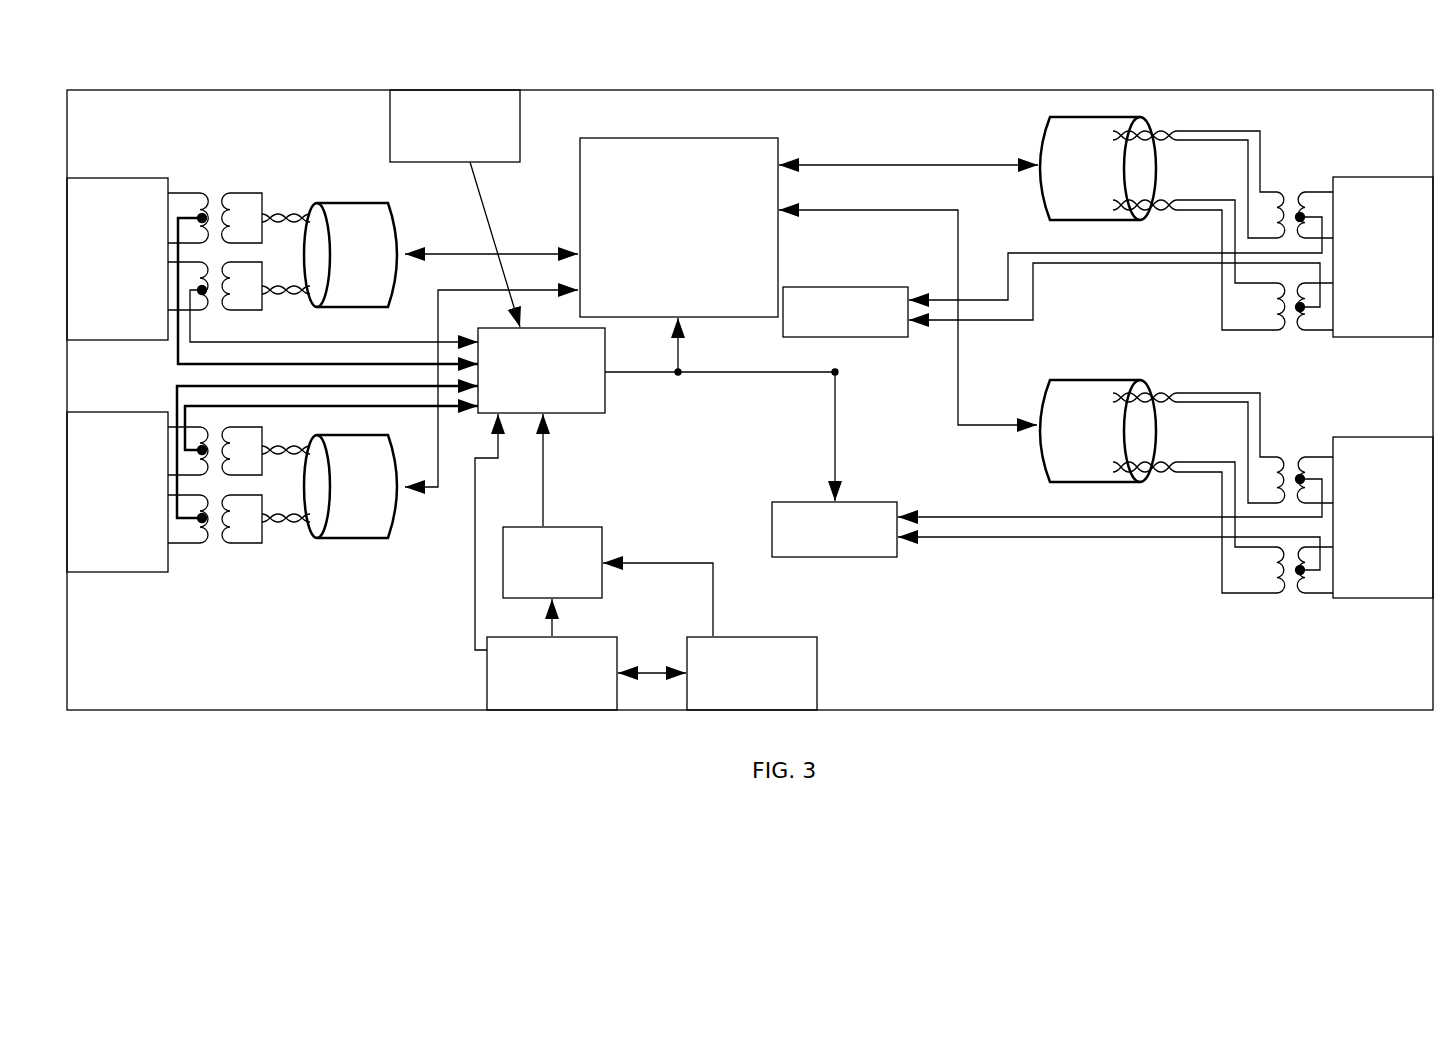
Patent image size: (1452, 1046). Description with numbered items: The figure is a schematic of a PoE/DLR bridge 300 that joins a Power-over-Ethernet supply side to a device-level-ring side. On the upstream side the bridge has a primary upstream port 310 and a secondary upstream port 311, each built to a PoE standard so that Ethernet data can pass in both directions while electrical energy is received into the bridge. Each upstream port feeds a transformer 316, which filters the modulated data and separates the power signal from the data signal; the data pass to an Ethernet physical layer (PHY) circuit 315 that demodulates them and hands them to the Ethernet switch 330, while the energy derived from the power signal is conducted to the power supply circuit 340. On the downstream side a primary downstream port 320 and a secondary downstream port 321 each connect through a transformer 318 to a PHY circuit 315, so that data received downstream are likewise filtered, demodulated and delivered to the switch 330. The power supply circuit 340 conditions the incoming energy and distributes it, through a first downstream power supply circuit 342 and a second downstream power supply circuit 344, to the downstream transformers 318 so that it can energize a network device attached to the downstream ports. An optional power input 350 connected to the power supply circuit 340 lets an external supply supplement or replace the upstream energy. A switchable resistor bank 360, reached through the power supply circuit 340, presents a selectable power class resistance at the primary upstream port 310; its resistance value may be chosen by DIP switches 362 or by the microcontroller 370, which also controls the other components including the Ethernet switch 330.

The PoE/DLR bridge 300 is at (160, 80).
The primary upstream port 310 is at (141, 178).
The secondary upstream port 311 is at (92, 573).
The Ethernet physical layer (PHY) circuit 315 is at (358, 203).
The transformer 316 is at (216, 190).
The transformer 318 is at (1298, 176).
The primary downstream port 320 is at (1402, 177).
The secondary downstream port 321 is at (1360, 599).
The Ethernet switch 330 is at (684, 138).
The power supply circuit 340 is at (606, 400).
The first downstream power supply circuit 342 is at (852, 287).
The second downstream power supply circuit 344 is at (888, 502).
The power input 350 is at (390, 135).
The switchable resistor bank 360 is at (580, 527).
The DIP switch 362 is at (817, 646).
The microcontroller 370 is at (487, 675).